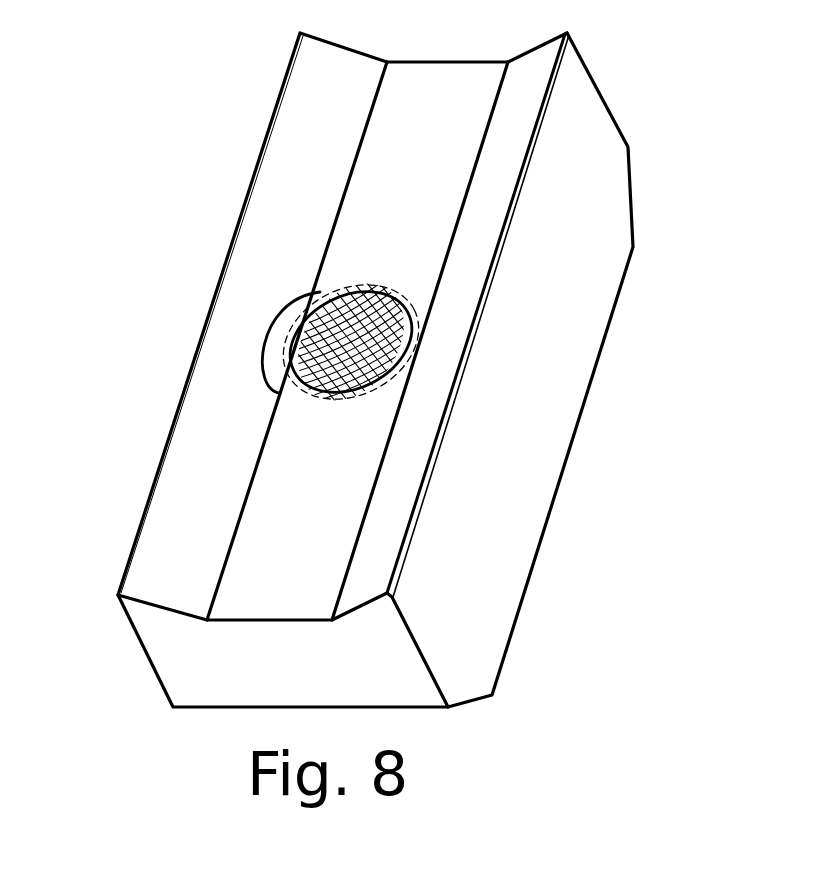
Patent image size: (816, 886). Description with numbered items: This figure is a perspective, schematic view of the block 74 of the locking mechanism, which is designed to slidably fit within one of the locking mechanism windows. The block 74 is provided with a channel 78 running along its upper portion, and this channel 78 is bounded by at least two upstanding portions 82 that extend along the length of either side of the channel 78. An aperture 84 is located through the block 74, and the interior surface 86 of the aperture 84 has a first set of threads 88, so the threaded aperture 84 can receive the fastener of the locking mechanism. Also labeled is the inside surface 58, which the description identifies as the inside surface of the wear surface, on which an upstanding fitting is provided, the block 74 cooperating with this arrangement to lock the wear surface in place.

The inside surface 58 is at (162, 608).
The block 74 is at (553, 342).
The channel 78 is at (437, 83).
The upstanding portions 82 is at (277, 192).
The aperture 84 is at (398, 278).
The interior surface 86 is at (316, 382).
The first set of threads 88 is at (328, 295).